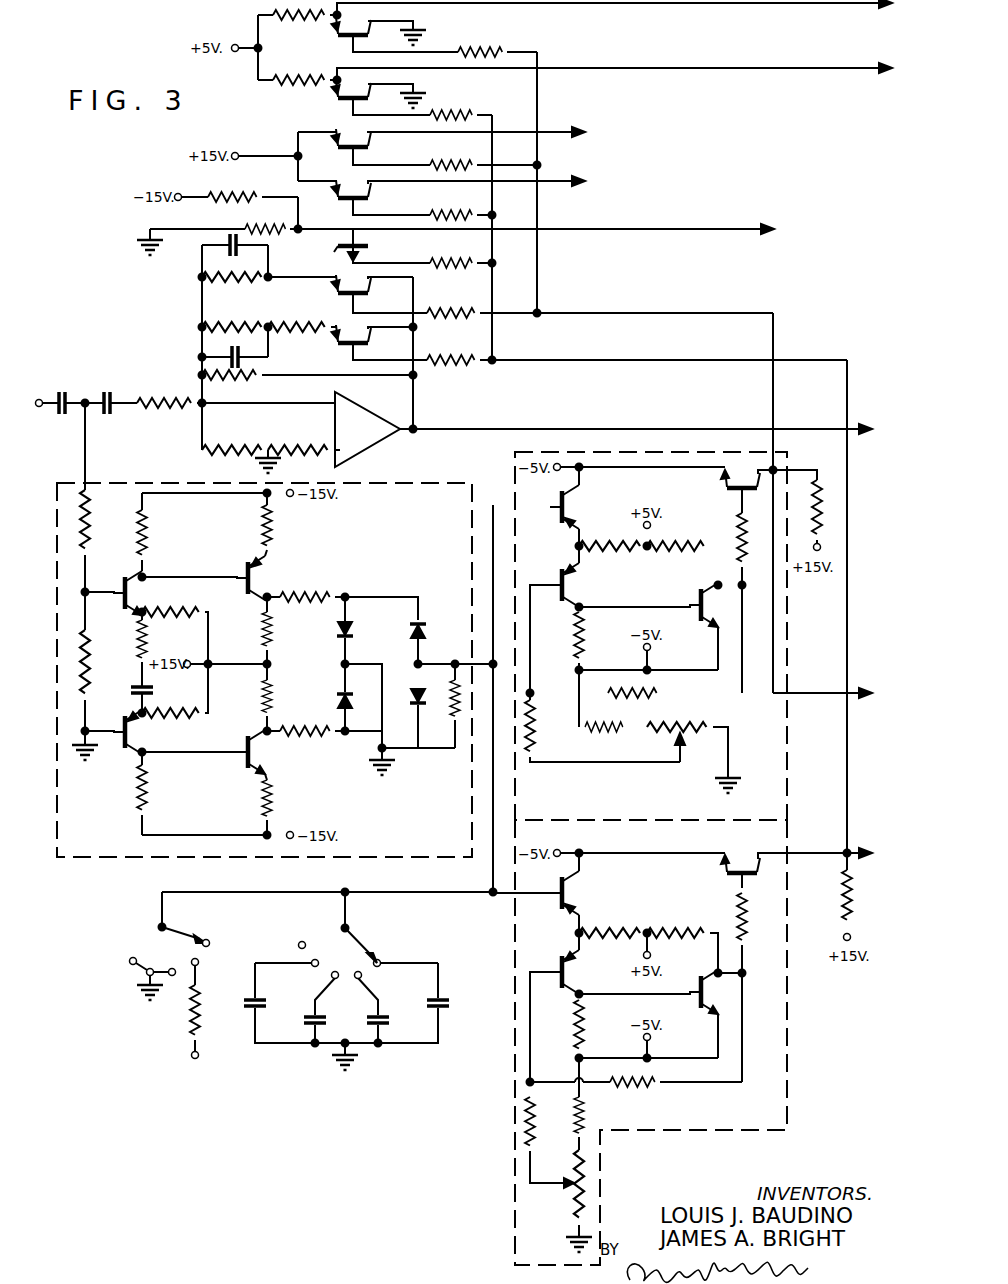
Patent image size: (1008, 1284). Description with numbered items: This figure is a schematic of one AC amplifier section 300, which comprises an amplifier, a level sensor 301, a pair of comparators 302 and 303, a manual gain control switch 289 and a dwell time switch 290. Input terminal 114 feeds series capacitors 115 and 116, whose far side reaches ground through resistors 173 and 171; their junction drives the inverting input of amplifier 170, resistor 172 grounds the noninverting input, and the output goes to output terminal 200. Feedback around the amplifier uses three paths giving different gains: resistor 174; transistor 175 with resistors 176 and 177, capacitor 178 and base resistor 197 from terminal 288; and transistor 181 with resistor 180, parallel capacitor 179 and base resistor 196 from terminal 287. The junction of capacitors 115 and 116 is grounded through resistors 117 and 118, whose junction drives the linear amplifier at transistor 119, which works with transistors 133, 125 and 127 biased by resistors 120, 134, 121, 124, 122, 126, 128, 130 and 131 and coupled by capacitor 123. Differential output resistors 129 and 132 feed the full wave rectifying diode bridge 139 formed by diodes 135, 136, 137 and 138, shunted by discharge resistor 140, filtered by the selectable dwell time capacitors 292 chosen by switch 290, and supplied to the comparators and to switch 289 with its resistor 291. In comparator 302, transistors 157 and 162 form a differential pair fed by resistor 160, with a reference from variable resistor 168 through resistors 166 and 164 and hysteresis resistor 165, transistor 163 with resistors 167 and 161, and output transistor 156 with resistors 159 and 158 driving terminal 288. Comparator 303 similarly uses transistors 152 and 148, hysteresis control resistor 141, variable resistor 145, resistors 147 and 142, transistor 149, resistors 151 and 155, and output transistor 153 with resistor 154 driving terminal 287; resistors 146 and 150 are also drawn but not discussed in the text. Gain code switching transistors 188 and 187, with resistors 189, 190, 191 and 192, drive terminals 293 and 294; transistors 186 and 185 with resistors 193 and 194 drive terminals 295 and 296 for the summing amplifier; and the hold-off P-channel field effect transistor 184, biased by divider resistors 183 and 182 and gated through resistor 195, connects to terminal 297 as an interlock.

The input terminal 114 is at (42, 399).
The capacitor 115 is at (62, 391).
The capacitor 116 is at (107, 391).
The resistor 117 is at (88, 533).
The resistor 118 is at (90, 686).
The transistor 119 is at (118, 579).
The resistor 120 is at (148, 539).
The resistor 121 is at (176, 610).
The resistor 122 is at (137, 642).
The capacitor 123 is at (154, 690).
The resistor 124 is at (174, 720).
The transistor 125 is at (118, 748).
The resistor 126 is at (150, 803).
The transistor 127 is at (246, 765).
The resistor 128 is at (277, 806).
The resistor 129 is at (306, 738).
The resistor 130 is at (279, 702).
The resistor 131 is at (284, 632).
The resistor 132 is at (309, 594).
The transistor 133 is at (242, 569).
The resistor 134 is at (274, 528).
The diode 135 is at (349, 632).
The diode 136 is at (421, 636).
The diode 137 is at (338, 708).
The diode 138 is at (408, 710).
The full wave rectifying diode bridge 139 is at (395, 655).
The discharge resistor 140 is at (449, 716).
The hysteresis control resistor 141 is at (532, 735).
The resistor 142 is at (603, 728).
The variable resistor 145 is at (681, 728).
The resistor 146 is at (648, 694).
The resistor 147 is at (576, 650).
The transistor 148 is at (557, 582).
The transistor 149 is at (693, 594).
The resistor 150 is at (627, 555).
The resistor 151 is at (683, 554).
The transistor 152 is at (557, 500).
The transistor 153 is at (728, 492).
The resistor 154 is at (822, 496).
The resistor 155 is at (733, 540).
The transistor 156 is at (726, 874).
The transistor 157 is at (557, 885).
The resistor 158 is at (853, 899).
The resistor 159 is at (747, 936).
The resistor 160 is at (606, 931).
The resistor 161 is at (684, 931).
The transistor 162 is at (557, 963).
The transistor 163 is at (690, 982).
The resistor 164 is at (573, 1032).
The resistor 165 is at (538, 1122).
The resistor 166 is at (585, 1116).
The resistor 167 is at (641, 1096).
The variable resistor 168 is at (569, 1196).
The amplifier 170 is at (362, 417).
The resistor 171 is at (238, 444).
The resistor 172 is at (299, 444).
The resistor 173 is at (164, 412).
The resistor 174 is at (280, 382).
The transistor 175 is at (371, 340).
The resistor 176 is at (291, 322).
The resistor 177 is at (239, 322).
The capacitor 178 is at (239, 362).
The capacitor 179 is at (228, 245).
The resistor 180 is at (242, 283).
The transistor 181 is at (371, 291).
The resistor 182 is at (248, 226).
The resistor 183 is at (236, 192).
The P-channel field effect transistor 184 is at (337, 252).
The transistor 185 is at (337, 202).
The transistor 186 is at (337, 150).
The transistor 187 is at (335, 103).
The transistor 188 is at (335, 41).
The resistor 189 is at (302, 22).
The resistor 190 is at (294, 84).
The resistor 191 is at (472, 50).
The resistor 192 is at (451, 112).
The resistor 193 is at (451, 162).
The resistor 194 is at (456, 212).
The resistor 195 is at (456, 260).
The resistor 196 is at (446, 312).
The resistor 197 is at (449, 360).
The output terminal 200 is at (872, 428).
The output terminal 287 is at (872, 691).
The output terminal 288 is at (872, 852).
The manual gain control switch 289 is at (180, 929).
The dwell time switch 290 is at (365, 940).
The resistor 291 is at (187, 1025).
The capacitors 292 is at (295, 1058).
The output terminal 293 is at (880, 9).
The output terminal 294 is at (880, 72).
The output terminal 295 is at (584, 130).
The output terminal 296 is at (584, 180).
The output terminal 297 is at (771, 228).
The AC amplifier section 300 is at (468, 466).
The level sensor 301 is at (102, 857).
The comparator 302 is at (797, 1034).
The comparator 303 is at (794, 736).